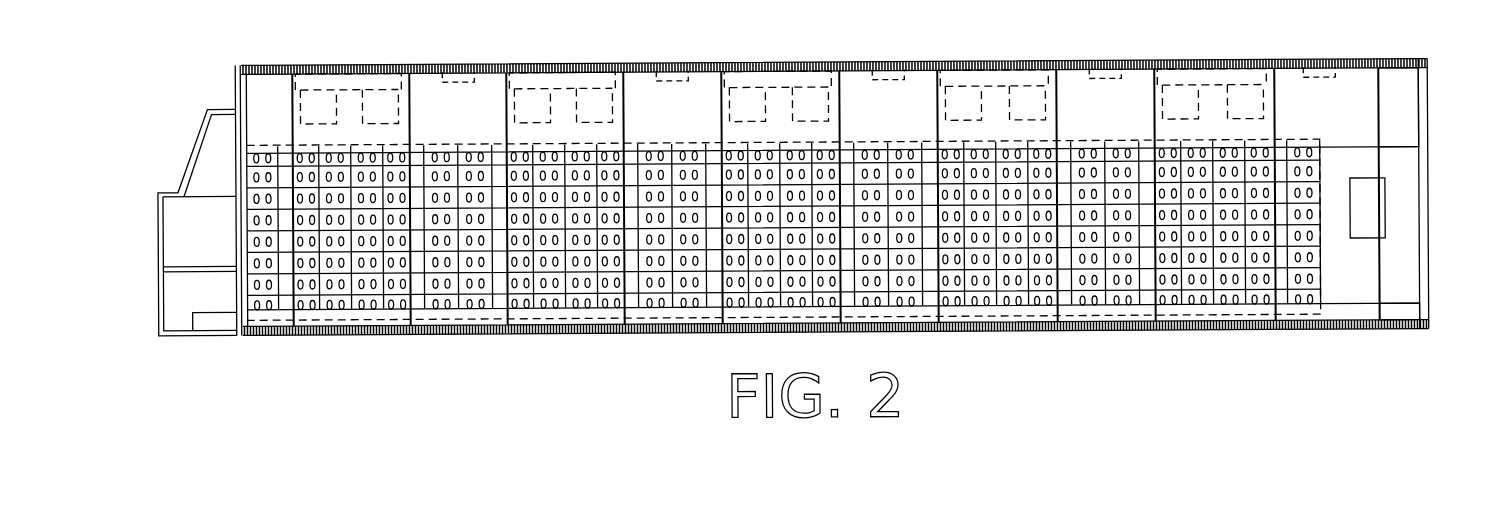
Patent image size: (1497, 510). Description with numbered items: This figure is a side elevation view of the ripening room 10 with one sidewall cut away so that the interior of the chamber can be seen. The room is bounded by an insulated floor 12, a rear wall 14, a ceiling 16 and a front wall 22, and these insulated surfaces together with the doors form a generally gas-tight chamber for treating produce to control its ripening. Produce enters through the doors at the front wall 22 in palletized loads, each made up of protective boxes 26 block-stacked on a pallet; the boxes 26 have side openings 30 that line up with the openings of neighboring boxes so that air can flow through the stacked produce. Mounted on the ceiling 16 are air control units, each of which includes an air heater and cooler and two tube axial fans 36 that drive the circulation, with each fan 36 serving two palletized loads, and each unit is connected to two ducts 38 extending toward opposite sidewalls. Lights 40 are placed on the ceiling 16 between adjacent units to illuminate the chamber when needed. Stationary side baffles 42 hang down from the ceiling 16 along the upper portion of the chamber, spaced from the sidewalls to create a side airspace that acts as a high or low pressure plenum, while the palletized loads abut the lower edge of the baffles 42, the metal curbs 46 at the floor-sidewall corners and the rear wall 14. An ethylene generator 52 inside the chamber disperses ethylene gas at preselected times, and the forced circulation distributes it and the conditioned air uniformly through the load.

The ripening room 10 is at (1297, 45).
The floor 12 is at (972, 325).
The rear wall 14 is at (236, 234).
The ceiling 16 is at (913, 62).
The front wall 22 is at (1428, 71).
The protective boxes 26 is at (250, 180).
The side openings 30 is at (308, 308).
The tube axial fans 36 is at (600, 113).
The ducts 38 is at (980, 78).
The lights 40 is at (1108, 74).
The side baffles 42 is at (1408, 122).
The metal curbs 46 is at (1407, 308).
The ethylene generator 52 is at (1387, 210).